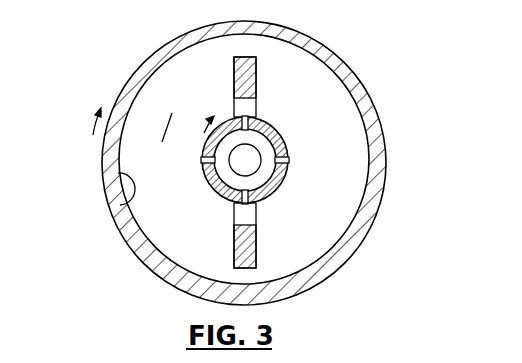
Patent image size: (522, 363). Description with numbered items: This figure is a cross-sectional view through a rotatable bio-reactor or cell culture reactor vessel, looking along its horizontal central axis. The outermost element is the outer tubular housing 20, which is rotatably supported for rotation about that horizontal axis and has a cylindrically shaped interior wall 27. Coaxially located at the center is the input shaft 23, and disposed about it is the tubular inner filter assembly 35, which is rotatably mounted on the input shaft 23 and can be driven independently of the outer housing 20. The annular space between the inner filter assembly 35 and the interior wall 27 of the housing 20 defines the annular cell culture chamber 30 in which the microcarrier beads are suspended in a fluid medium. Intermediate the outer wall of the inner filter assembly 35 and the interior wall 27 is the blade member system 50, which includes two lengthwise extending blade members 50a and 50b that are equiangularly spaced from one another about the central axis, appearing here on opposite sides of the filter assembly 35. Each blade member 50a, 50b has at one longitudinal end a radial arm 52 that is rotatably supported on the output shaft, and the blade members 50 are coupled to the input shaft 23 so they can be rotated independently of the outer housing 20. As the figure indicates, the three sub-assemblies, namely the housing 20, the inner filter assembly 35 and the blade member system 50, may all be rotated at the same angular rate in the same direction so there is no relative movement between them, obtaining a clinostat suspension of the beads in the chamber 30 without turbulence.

The outer tubular housing 20 is at (138, 262).
The interior wall 27 is at (112, 208).
The cell culture chamber 30 is at (324, 221).
The inner filter assembly 35 is at (285, 135).
The input shaft 23 is at (255, 158).
The blade member system 50 is at (326, 150).
The blade member 50a is at (257, 86).
The blade member 50b is at (258, 245).
The radial arm 52 is at (233, 107).